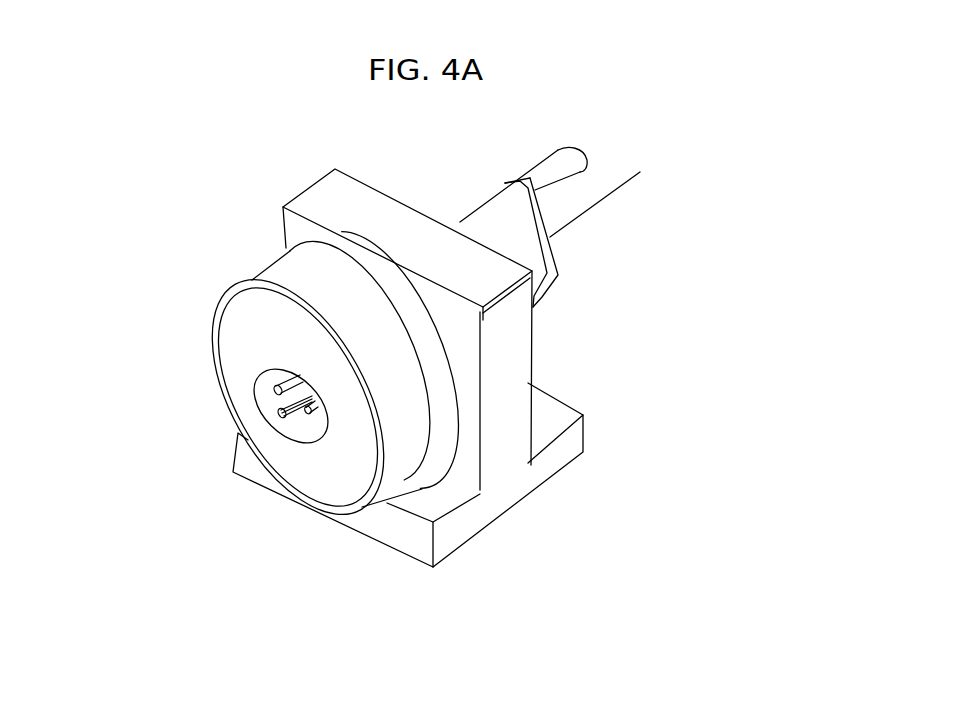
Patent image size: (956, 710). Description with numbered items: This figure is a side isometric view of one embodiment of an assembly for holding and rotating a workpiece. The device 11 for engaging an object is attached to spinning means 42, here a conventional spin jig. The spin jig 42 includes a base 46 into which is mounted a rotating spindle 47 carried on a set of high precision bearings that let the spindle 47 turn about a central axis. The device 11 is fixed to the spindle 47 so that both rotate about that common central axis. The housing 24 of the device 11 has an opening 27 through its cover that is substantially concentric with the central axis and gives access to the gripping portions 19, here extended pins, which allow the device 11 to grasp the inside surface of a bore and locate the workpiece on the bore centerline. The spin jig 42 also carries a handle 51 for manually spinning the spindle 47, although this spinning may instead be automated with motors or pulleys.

The device for engaging an object 11 is at (290, 271).
The gripping portions 19 is at (265, 499).
The housing 24 is at (446, 409).
The opening 27 is at (352, 503).
The spinning means 42 is at (550, 373).
The base 46 is at (338, 223).
The spindle 47 is at (505, 368).
The handle 51 is at (564, 227).